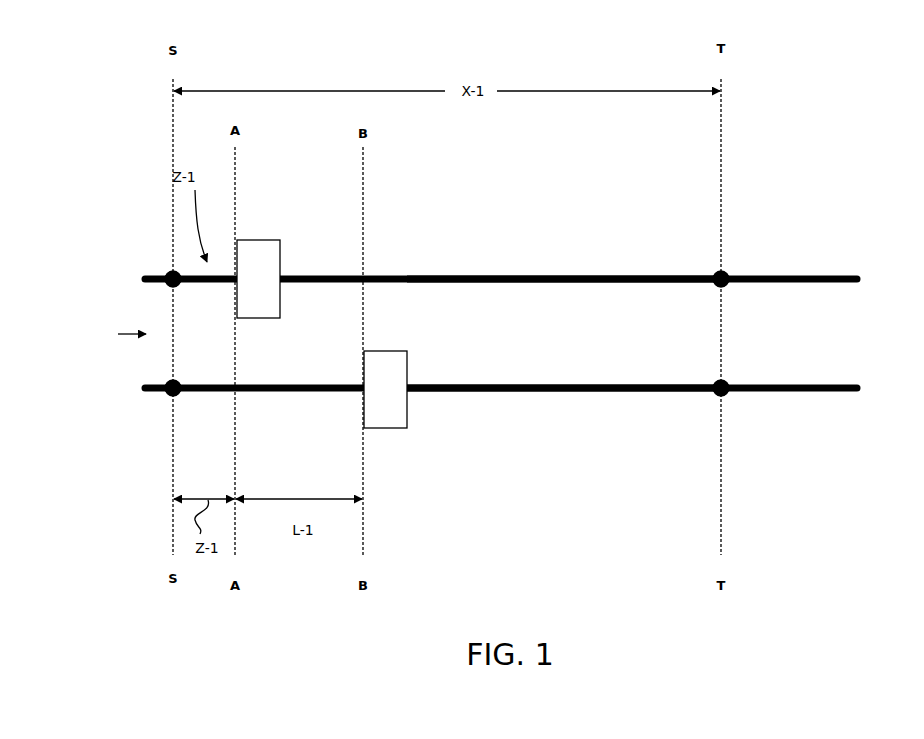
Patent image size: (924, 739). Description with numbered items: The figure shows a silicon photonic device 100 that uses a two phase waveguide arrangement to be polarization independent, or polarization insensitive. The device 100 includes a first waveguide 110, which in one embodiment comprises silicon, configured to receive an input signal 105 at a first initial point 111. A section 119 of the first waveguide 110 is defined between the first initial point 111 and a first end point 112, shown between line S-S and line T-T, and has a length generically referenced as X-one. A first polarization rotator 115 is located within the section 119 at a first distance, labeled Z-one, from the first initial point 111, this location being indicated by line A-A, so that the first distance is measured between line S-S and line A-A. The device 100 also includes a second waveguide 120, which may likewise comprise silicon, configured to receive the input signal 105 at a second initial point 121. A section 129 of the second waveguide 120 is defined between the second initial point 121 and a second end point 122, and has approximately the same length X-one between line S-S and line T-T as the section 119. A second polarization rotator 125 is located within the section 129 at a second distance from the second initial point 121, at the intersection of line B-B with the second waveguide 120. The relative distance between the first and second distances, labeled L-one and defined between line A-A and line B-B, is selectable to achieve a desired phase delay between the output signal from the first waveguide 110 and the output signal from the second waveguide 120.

The silicon photonic device 100 is at (843, 73).
The input signal 105 is at (88, 356).
The first waveguide 110 is at (749, 275).
The first initial point 111 is at (164, 270).
The first end point 112 is at (714, 270).
The first polarization rotator 115 is at (276, 240).
The section of the first waveguide 119 is at (540, 230).
The second waveguide 120 is at (748, 384).
The second initial point 121 is at (166, 396).
The second end point 122 is at (716, 396).
The second polarization rotator 125 is at (410, 428).
The section of the second waveguide 129 is at (570, 430).